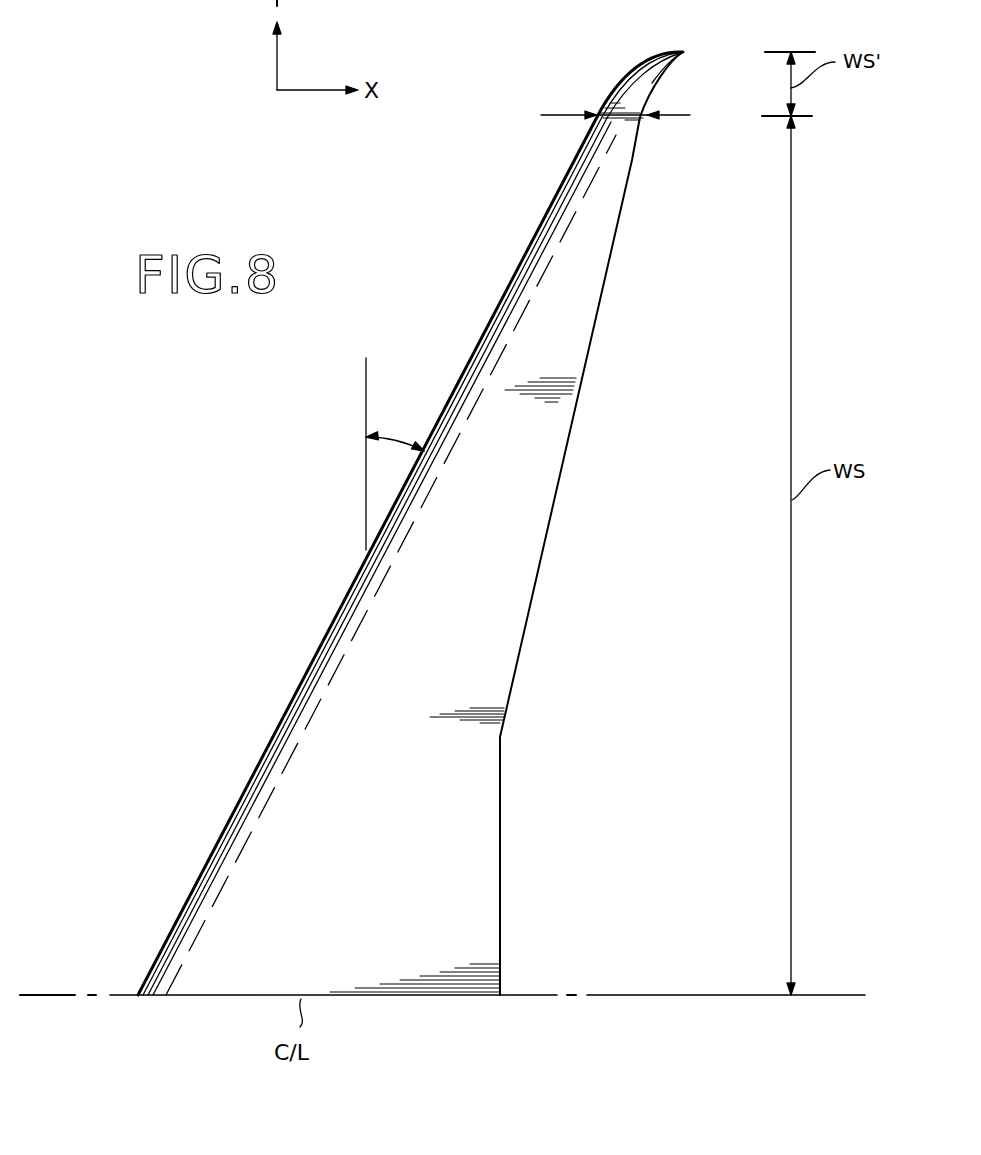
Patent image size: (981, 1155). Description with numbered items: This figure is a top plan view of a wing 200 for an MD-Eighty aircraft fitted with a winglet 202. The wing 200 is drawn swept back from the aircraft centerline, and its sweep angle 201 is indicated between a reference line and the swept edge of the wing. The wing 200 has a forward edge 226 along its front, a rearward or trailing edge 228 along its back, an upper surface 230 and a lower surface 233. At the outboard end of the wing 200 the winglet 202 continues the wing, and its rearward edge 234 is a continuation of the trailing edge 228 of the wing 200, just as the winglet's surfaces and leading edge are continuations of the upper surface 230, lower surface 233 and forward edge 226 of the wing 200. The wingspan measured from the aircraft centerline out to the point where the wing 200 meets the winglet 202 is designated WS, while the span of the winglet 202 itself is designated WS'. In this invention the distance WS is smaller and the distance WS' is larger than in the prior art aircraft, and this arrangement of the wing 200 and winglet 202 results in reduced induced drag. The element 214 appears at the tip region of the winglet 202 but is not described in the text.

The wing 200 is at (436, 497).
The sweep angle 201 is at (393, 440).
The winglet 202 is at (598, 86).
The winglet tip 214 is at (683, 50).
The forward edge 226 is at (208, 858).
The trailing edge 228 is at (517, 681).
The upper surface 230 is at (357, 633).
The lower surface 233 is at (640, 70).
The rearward edge 234 is at (655, 88).